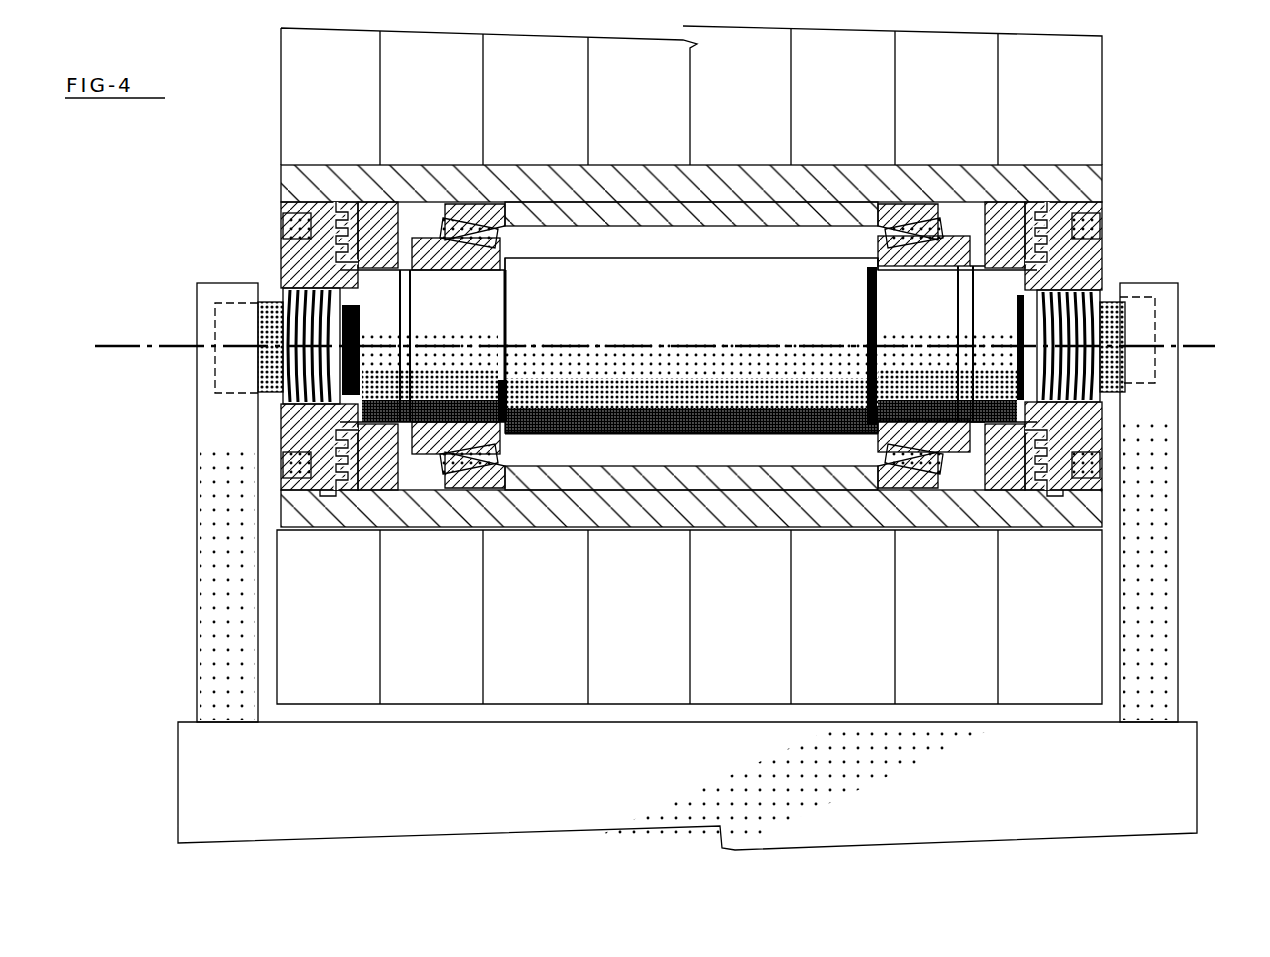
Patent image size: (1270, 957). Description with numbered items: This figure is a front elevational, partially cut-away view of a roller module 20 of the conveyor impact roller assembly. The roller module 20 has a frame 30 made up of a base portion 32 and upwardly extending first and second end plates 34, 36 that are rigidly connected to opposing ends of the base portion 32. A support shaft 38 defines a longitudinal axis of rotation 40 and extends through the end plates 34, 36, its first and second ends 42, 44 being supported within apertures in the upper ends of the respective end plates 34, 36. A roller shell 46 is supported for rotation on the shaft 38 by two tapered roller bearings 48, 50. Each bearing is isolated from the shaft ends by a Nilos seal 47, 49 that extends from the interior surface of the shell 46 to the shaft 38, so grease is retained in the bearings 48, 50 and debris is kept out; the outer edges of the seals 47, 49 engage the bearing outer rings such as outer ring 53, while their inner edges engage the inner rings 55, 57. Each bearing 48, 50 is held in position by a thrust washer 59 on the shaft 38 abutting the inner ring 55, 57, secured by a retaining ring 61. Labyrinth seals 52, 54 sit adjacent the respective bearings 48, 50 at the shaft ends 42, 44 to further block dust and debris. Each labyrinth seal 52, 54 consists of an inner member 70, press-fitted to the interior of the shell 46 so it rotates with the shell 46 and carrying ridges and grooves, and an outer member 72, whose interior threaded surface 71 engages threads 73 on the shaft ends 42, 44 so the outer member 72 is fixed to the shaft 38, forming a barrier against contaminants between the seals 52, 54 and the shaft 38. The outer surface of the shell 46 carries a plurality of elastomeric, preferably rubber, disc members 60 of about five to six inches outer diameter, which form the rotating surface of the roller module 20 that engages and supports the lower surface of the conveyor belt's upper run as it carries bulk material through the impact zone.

The roller module 20 is at (1168, 200).
The frame 30 is at (1185, 705).
The base portion 32 is at (778, 784).
The first end plate 34 is at (1165, 575).
The second end plate 36 is at (205, 540).
The support shaft 38 is at (270, 302).
The longitudinal axis of rotation 40 is at (1200, 350).
The first end of the shaft 42 is at (1155, 292).
The second end of the shaft 44 is at (215, 300).
The roller shell 46 is at (300, 183).
The Nilos seal 47 is at (958, 222).
The tapered roller bearing 48 is at (870, 238).
The Nilos seal 49 is at (432, 232).
The tapered roller bearing 50 is at (507, 218).
The labyrinth seal 52 is at (1052, 492).
The outer ring 53 is at (470, 226).
The labyrinth seal 54 is at (329, 492).
The inner ring 55 is at (880, 432).
The inner ring 57 is at (487, 432).
The thrust washer 59 is at (410, 430).
The disc member 60 is at (303, 118).
The retaining ring 61 is at (400, 422).
The inner member 70 is at (372, 212).
The interior threaded surface 71 is at (258, 398).
The outer member 72 is at (320, 228).
The threads 73 is at (300, 330).